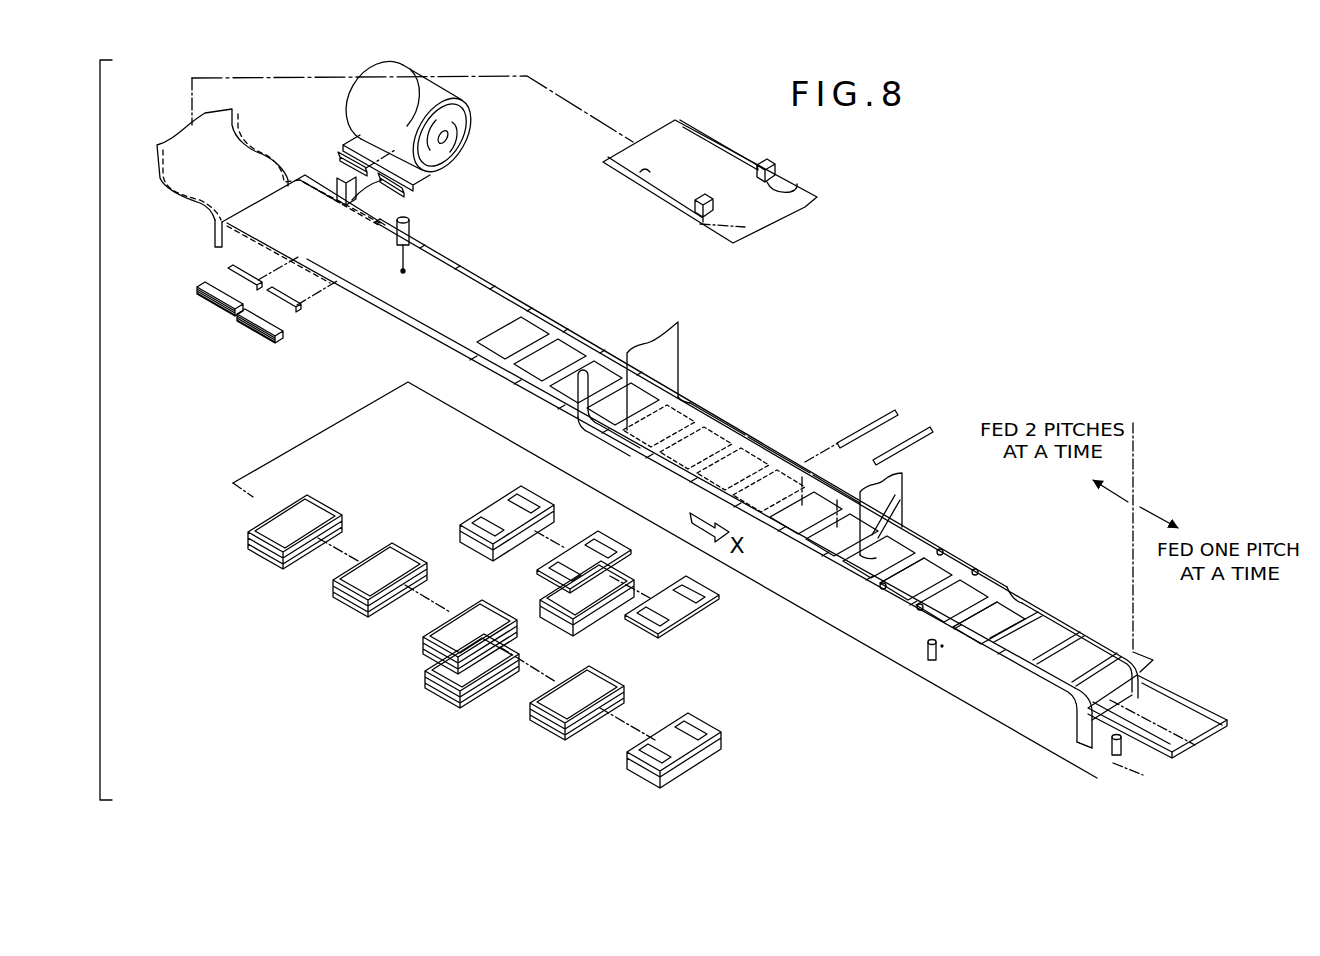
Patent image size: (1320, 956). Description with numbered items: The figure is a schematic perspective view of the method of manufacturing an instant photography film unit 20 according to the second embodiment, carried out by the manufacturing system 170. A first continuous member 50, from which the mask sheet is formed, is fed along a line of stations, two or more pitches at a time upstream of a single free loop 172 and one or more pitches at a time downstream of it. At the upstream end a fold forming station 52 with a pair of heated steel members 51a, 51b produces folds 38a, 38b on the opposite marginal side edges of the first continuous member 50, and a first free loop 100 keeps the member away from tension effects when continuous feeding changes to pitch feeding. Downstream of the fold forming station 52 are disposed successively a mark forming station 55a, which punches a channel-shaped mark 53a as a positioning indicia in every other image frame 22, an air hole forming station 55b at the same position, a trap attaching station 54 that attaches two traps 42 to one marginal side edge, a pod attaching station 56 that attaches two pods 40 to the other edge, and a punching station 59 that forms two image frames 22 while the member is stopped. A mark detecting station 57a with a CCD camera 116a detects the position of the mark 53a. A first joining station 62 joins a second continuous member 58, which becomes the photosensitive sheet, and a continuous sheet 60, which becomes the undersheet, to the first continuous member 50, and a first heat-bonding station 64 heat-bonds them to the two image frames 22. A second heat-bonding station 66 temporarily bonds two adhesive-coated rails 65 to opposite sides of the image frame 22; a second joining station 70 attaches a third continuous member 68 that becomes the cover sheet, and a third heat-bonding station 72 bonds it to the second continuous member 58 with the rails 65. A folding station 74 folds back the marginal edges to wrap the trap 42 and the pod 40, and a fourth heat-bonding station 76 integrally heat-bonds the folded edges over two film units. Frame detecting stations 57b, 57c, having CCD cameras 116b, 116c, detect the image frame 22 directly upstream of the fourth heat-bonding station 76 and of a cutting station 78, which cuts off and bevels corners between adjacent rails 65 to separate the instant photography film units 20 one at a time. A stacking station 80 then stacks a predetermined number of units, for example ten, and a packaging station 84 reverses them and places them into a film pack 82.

The instant photography film unit 20 is at (315, 503).
The image frame 22 is at (452, 400).
The fold 38a is at (640, 172).
The fold 38b is at (707, 133).
The pod 40 is at (260, 280).
The trap 42 is at (352, 197).
The first continuous member 50 is at (770, 208).
The heated steel member 51a is at (699, 218).
The heated steel member 51b is at (794, 182).
The fold forming station 52 is at (784, 156).
The mark 53a is at (283, 203).
The trap attaching station 54 is at (404, 200).
The mark forming station 55a is at (283, 196).
The air hole forming station 55b is at (330, 176).
The pod attaching station 56 is at (324, 286).
The mark detecting station 57a is at (442, 244).
The frame detecting station 57b is at (921, 637).
The frame detecting station 57c is at (1106, 750).
The second continuous member 58 is at (677, 355).
The punching station 59 is at (550, 311).
The continuous sheet 60 is at (570, 401).
The first joining station 62 is at (698, 391).
The first heat-bonding station 64 is at (746, 424).
The rail 65 is at (918, 432).
The second heat-bonding station 66 is at (787, 444).
The third continuous member 68 is at (902, 485).
The second joining station 70 is at (920, 518).
The third heat-bonding station 72 is at (970, 551).
The folding station 74 is at (1019, 584).
The fourth heat-bonding station 76 is at (1068, 609).
The cutting station 78 is at (1171, 680).
The stacking station 80 is at (262, 560).
The film pack 82 is at (505, 495).
The packaging station 84 is at (441, 702).
The first free loop 100 is at (211, 247).
The CCD camera 116a is at (411, 226).
The CCD camera 116b is at (937, 656).
The CCD camera 116c is at (1122, 752).
The manufacturing system 170 is at (925, 206).
The free loop 172 is at (1074, 727).